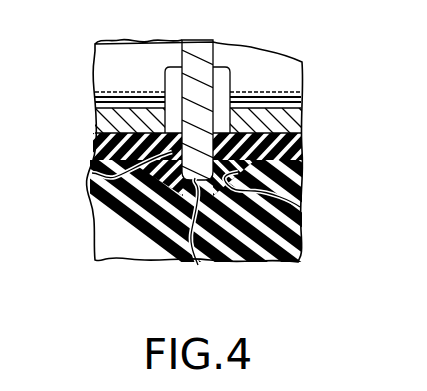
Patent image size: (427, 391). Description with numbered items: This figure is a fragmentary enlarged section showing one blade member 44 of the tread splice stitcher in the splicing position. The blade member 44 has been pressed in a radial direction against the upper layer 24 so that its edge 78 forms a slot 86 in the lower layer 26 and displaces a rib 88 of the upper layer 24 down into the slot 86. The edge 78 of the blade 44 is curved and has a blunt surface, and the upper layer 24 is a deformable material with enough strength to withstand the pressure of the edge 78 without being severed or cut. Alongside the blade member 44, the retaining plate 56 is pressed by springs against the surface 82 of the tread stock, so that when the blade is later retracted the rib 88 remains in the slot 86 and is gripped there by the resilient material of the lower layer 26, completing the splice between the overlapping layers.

The blade member 44 is at (196, 62).
The retaining plate 56 is at (302, 113).
The upper layer 24 is at (301, 140).
The lower layer 26 is at (290, 173).
The surface 82 is at (99, 122).
The rib 88 is at (92, 173).
The slot 86 is at (300, 207).
The edge 78 is at (198, 265).